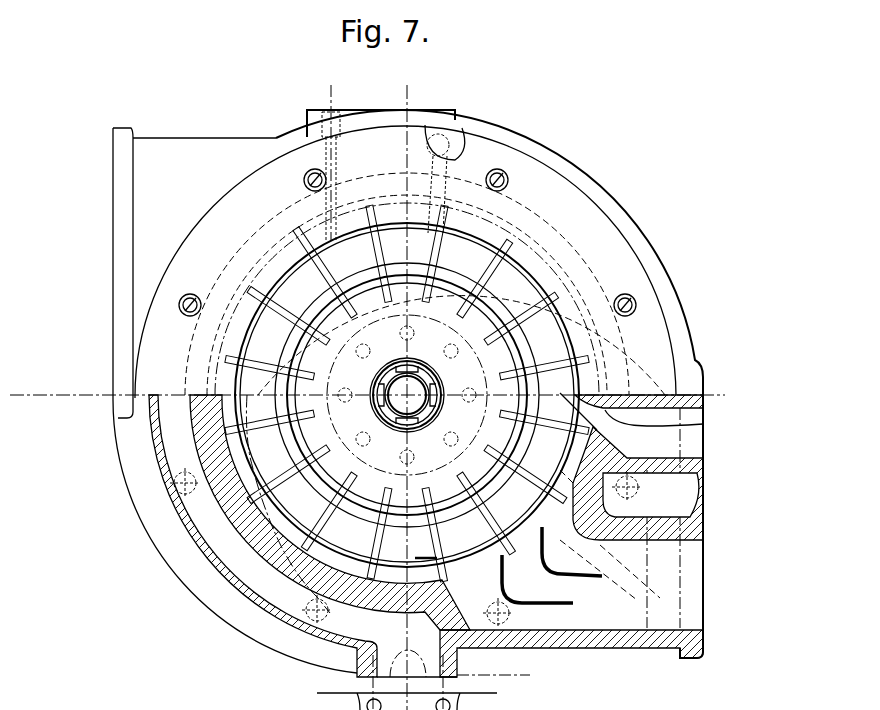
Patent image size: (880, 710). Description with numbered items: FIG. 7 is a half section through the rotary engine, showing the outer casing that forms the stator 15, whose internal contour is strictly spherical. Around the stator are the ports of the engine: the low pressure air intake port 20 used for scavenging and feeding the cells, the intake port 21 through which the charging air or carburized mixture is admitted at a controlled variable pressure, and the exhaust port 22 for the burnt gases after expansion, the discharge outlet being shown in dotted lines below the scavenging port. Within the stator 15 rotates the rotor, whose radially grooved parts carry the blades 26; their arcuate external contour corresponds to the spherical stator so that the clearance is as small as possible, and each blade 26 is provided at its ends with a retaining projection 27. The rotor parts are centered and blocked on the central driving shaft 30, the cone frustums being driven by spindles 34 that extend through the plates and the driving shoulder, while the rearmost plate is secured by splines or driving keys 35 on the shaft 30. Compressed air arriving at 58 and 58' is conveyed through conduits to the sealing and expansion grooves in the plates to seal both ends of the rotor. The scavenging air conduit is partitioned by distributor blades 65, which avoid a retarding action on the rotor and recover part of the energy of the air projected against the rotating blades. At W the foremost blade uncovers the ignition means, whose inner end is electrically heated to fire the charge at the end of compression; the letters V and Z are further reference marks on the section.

The stator 15 is at (267, 580).
The low pressure air intake port 20 is at (670, 567).
The intake port 21 is at (618, 428).
The exhaust port 22 is at (382, 602).
The blades 26 is at (275, 313).
The retaining projection 27 is at (302, 332).
The central driving shaft 30 is at (428, 365).
The spindles 34 is at (343, 398).
The driving keys 35 is at (444, 400).
The compressed air arrival point 58 is at (381, 156).
The compressed air arrival point 58' is at (458, 682).
The distributor blades 65 is at (567, 623).
The ignition means W is at (445, 140).
The point V is at (466, 444).
The axis Z is at (647, 600).